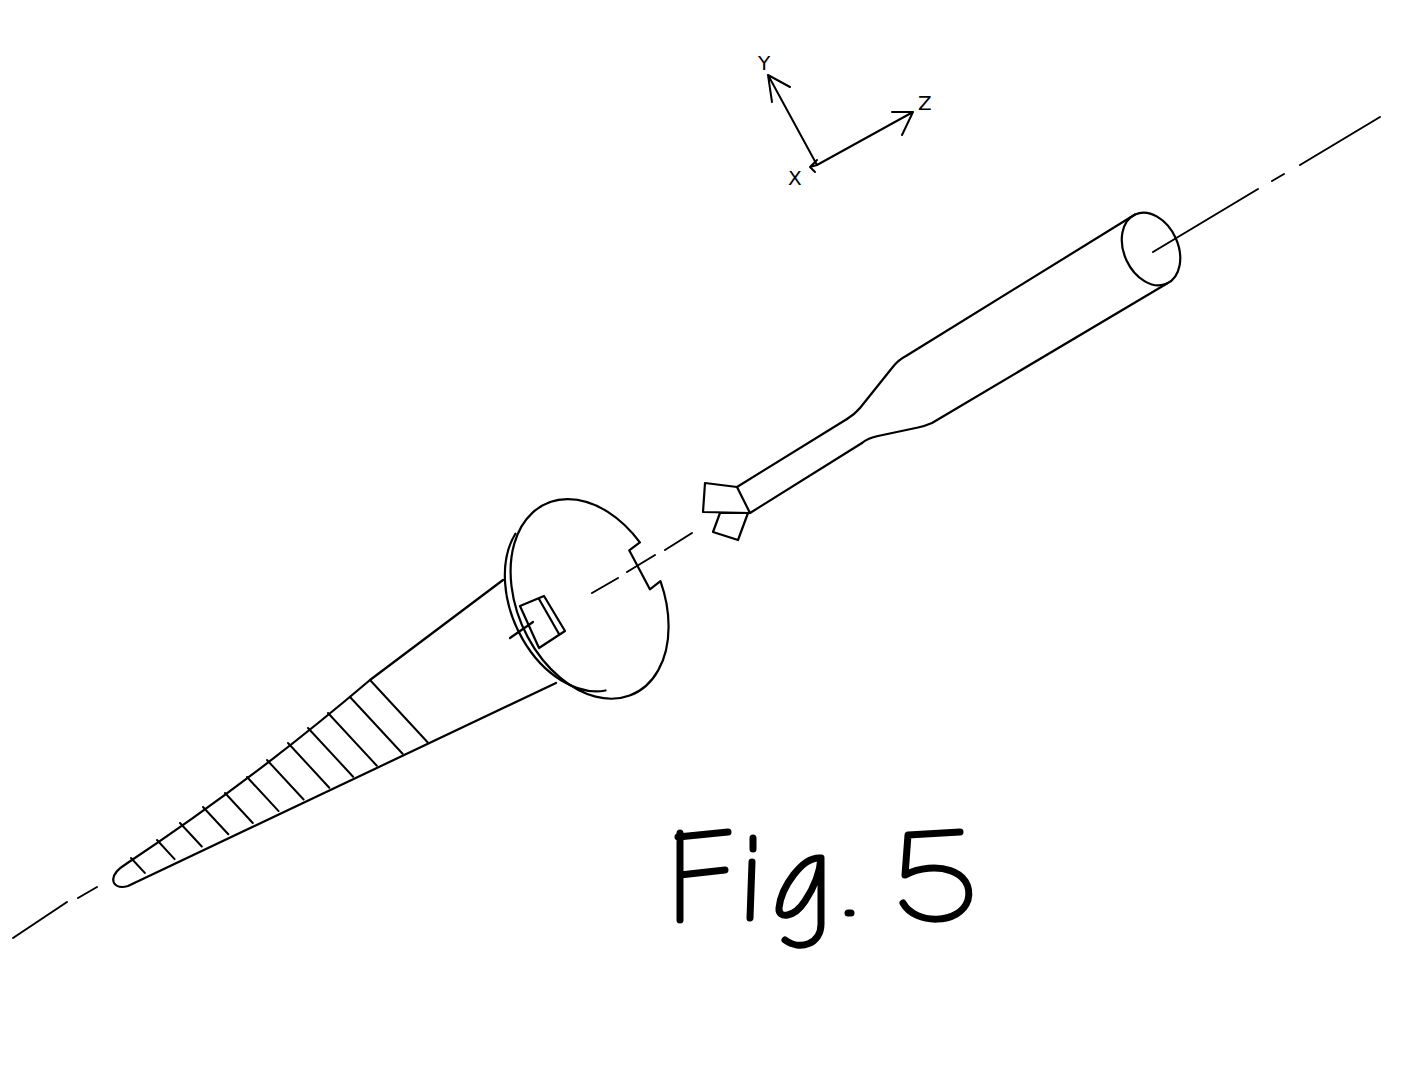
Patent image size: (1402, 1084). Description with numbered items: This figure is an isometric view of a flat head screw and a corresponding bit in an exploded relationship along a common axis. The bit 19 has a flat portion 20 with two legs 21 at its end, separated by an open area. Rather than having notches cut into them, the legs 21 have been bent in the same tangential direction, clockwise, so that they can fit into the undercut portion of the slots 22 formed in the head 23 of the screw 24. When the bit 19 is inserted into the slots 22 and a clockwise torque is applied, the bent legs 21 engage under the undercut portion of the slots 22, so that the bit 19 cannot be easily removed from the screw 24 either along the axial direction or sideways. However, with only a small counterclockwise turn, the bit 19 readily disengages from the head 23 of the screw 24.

The bit 19 is at (985, 303).
The flat portion 20 is at (792, 450).
The legs 21 is at (700, 500).
The slots 22 is at (520, 632).
The head 23 is at (545, 500).
The screw 24 is at (370, 678).